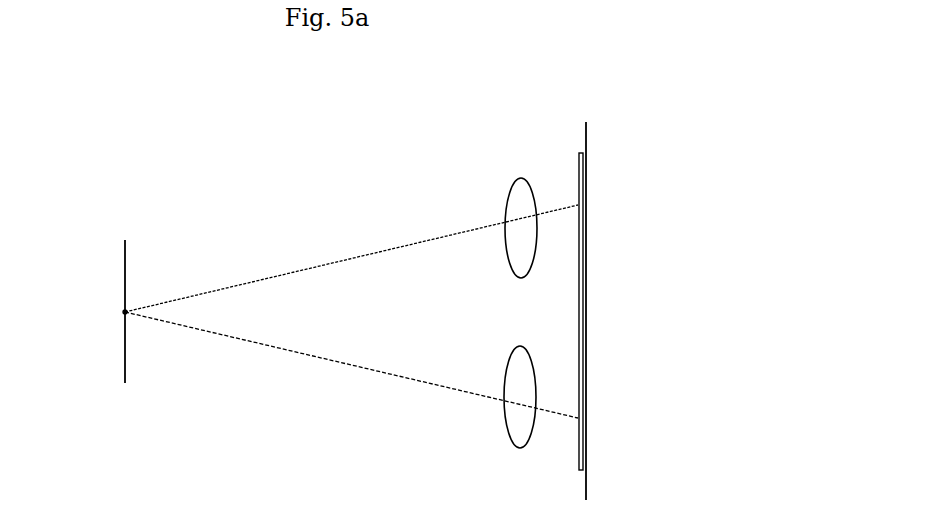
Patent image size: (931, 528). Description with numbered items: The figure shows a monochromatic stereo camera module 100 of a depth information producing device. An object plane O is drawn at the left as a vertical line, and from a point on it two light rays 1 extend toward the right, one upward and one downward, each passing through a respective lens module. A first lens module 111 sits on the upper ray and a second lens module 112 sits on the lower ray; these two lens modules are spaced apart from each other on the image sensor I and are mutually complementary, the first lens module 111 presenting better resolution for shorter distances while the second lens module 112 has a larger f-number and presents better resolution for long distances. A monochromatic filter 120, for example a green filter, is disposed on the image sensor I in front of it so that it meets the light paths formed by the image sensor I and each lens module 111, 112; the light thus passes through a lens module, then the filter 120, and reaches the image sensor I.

The monochromatic stereo camera module 100 is at (298, 173).
The object plane O is at (120, 253).
The light ray 1 is at (235, 285).
The first lens module 111 is at (510, 187).
The second lens module 112 is at (513, 347).
The monochromatic filter 120 is at (582, 153).
The image sensor I is at (587, 318).